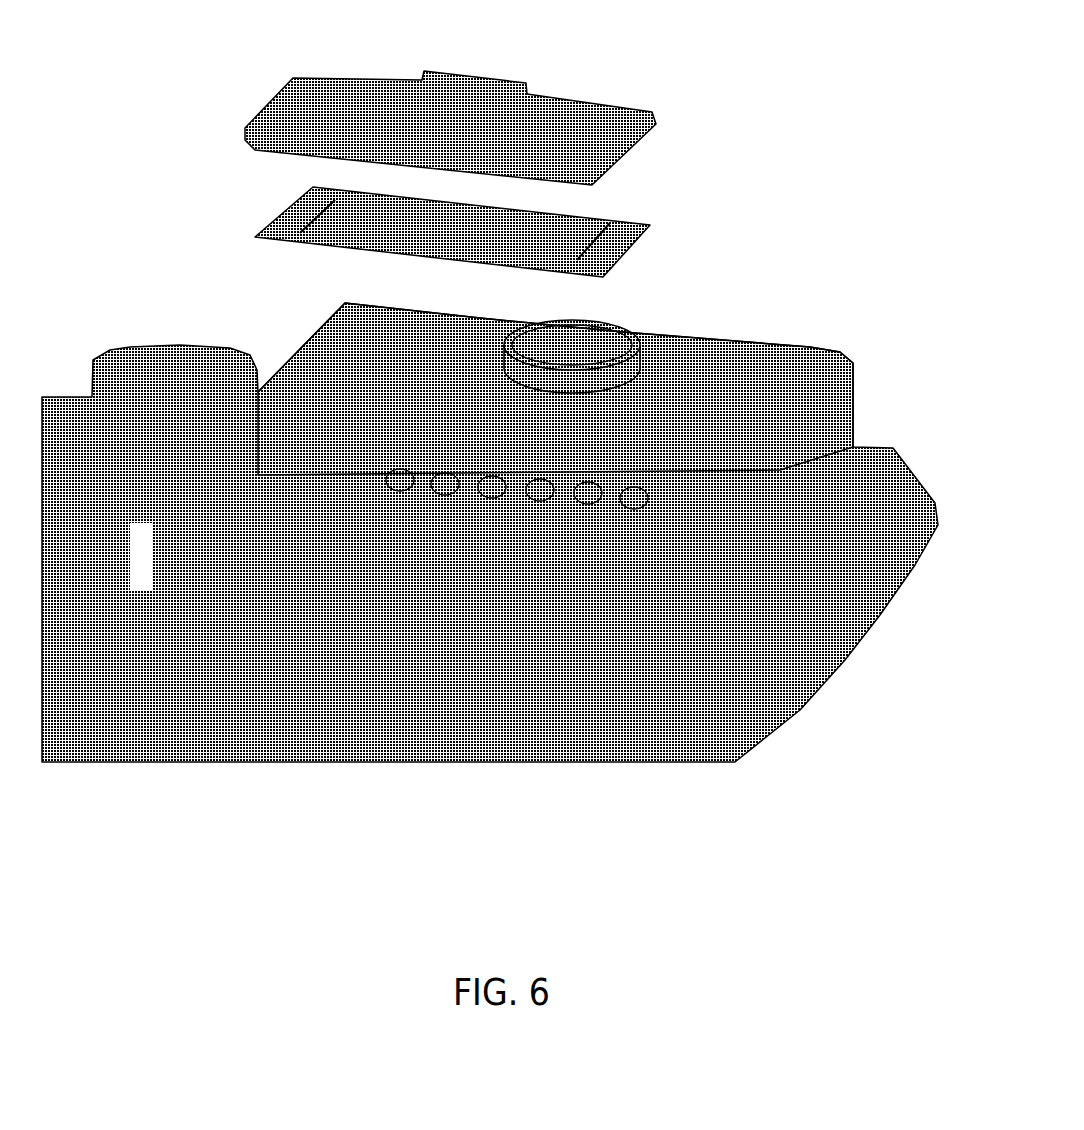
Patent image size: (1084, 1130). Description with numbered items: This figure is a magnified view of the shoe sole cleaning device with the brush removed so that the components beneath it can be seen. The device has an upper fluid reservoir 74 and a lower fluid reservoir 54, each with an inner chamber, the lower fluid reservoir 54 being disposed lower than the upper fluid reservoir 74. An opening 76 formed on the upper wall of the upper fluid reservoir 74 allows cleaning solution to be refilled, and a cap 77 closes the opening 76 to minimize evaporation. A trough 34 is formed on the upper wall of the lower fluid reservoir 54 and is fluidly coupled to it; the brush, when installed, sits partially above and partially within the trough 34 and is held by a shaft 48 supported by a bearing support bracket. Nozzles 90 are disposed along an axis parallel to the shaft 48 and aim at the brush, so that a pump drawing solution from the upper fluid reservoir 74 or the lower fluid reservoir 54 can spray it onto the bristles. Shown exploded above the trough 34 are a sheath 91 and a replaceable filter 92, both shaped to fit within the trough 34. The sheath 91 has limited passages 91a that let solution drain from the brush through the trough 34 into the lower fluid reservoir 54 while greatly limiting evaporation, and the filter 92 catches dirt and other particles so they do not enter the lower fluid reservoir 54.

The trough 34 is at (410, 557).
The shaft 48 is at (307, 493).
The lower fluid reservoir 54 is at (807, 587).
The upper fluid reservoir 74 is at (708, 358).
The opening 76 is at (605, 336).
The cap 77 is at (533, 333).
The nozzles 90 is at (632, 500).
The sheath 91 is at (608, 226).
The passages 91a is at (323, 218).
The replaceable filter 92 is at (587, 137).